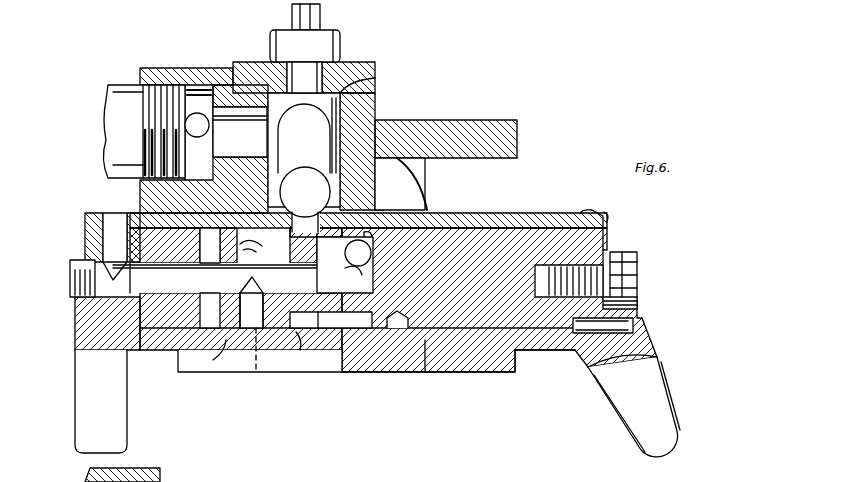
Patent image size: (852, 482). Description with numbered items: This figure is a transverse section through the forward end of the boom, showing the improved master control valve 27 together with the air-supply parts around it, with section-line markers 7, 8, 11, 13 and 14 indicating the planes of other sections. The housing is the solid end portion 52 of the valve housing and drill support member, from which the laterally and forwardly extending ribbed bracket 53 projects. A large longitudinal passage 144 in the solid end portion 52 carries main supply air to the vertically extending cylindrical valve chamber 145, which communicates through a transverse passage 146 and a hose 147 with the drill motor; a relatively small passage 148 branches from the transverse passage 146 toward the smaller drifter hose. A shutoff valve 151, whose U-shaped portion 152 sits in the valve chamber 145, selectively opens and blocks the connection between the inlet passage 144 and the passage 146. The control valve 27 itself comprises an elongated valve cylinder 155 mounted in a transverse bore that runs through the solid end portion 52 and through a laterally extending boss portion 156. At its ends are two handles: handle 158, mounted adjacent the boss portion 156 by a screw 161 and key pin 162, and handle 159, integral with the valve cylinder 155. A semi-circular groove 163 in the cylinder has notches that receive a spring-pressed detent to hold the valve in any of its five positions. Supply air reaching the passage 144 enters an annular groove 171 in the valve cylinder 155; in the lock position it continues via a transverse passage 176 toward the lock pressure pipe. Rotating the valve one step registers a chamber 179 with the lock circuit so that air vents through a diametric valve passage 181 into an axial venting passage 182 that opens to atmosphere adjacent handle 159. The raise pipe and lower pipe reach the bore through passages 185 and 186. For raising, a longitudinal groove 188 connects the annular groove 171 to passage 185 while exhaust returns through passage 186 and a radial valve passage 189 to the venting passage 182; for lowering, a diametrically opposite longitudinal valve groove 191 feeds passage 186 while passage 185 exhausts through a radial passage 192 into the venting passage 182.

The master control valve 27 is at (615, 228).
The solid end portion 52 is at (152, 197).
The ribbed bracket 53 is at (477, 132).
The longitudinal passage 144 is at (342, 182).
The valve chamber 145 is at (343, 112).
The transverse passage 146 is at (243, 110).
The hose 147 is at (108, 102).
The small passage 148 is at (199, 116).
The shutoff valve 151 is at (317, 44).
The U-shaped portion 152 is at (372, 75).
The valve cylinder 155 is at (482, 322).
The boss portion 156 is at (496, 214).
The handle 158 is at (645, 386).
The handle 159 is at (105, 379).
The screw 161 is at (628, 279).
The key pin 162 is at (615, 324).
The semi-circular groove 163 is at (427, 373).
The annular groove 171 is at (301, 358).
The transverse passage 176 is at (257, 372).
The chamber 179 is at (246, 361).
The diametric valve passage 181 is at (212, 270).
The axial venting passage 182 is at (113, 296).
The passage 185 is at (243, 278).
The passage 186 is at (352, 265).
The longitudinal groove 188 is at (307, 216).
The radial valve passage 189 is at (372, 236).
The longitudinal valve groove 191 is at (360, 328).
The radial passage 192 is at (226, 358).
The fragment 13 is at (603, 4).
The section line 8 is at (210, 190).
The section line 11 is at (277, 203).
The section line 14 is at (359, 207).
The section line 7 is at (402, 183).